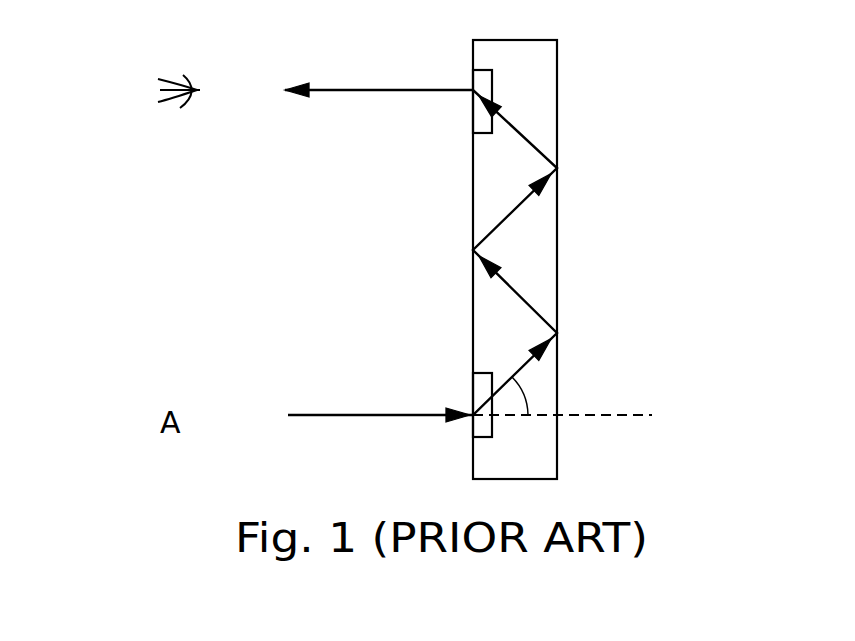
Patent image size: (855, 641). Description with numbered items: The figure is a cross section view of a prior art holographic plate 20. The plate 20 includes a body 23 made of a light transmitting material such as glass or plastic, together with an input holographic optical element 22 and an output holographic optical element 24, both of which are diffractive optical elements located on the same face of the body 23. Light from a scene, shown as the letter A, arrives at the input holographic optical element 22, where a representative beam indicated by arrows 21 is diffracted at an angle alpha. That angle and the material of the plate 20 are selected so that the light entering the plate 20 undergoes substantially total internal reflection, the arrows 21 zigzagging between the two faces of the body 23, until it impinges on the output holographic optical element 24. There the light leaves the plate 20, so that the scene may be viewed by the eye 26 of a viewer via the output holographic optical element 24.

The plate 20 is at (562, 243).
The arrows 21 is at (540, 152).
The input holographic optical element 22 is at (472, 430).
The body 23 is at (505, 53).
The output holographic optical element 24 is at (476, 82).
The eye 26 is at (165, 73).